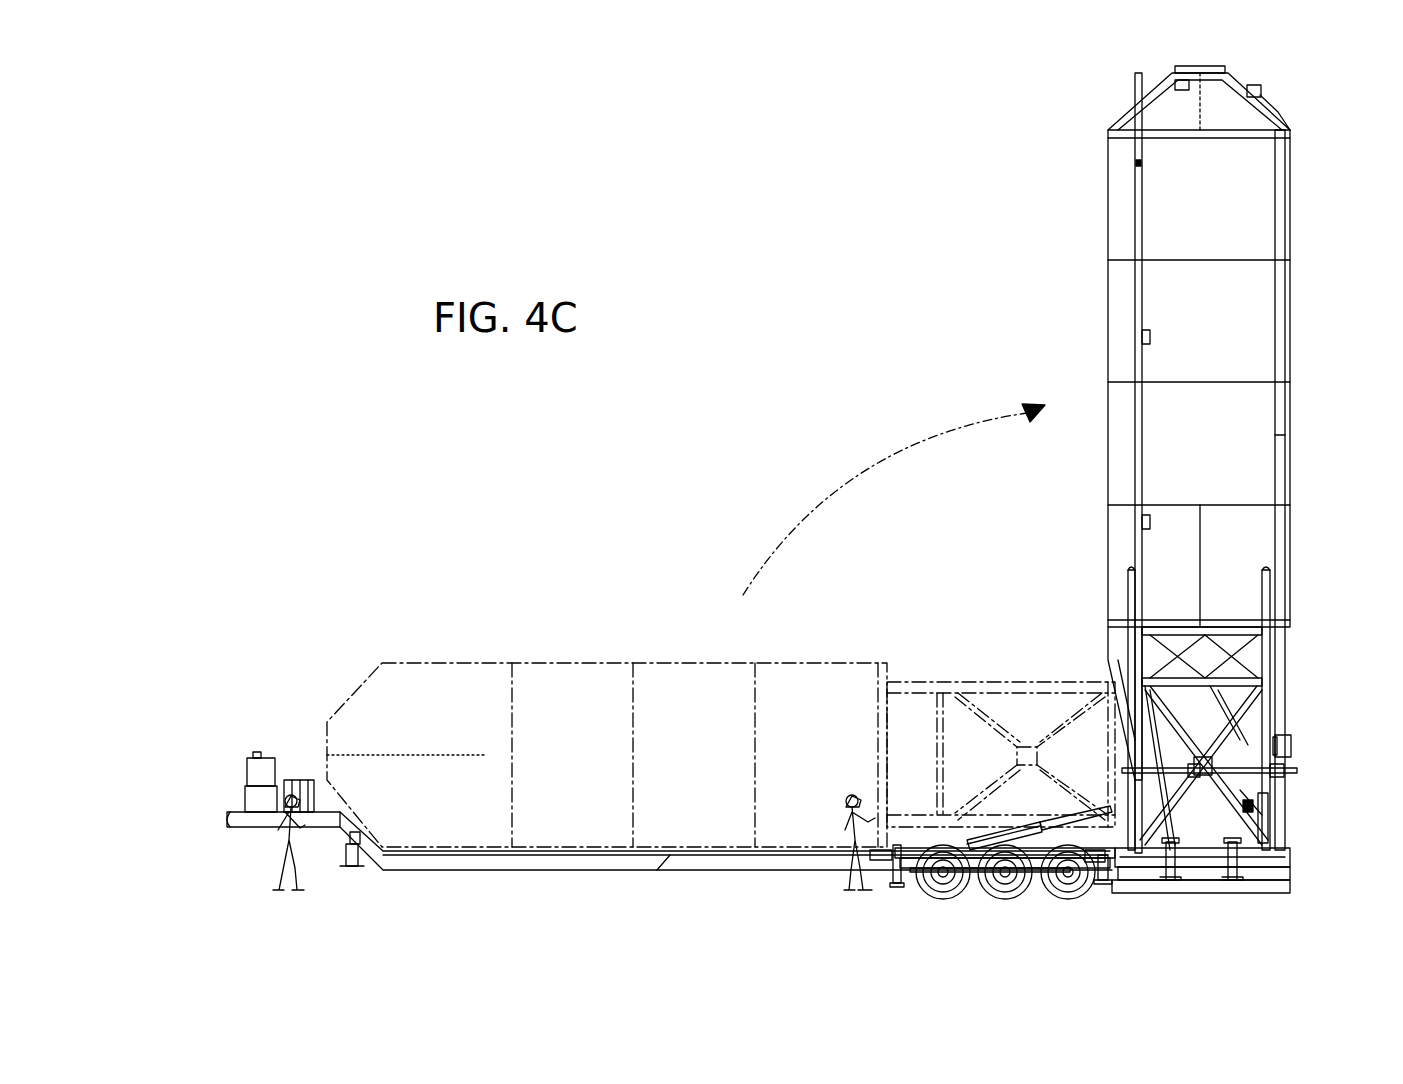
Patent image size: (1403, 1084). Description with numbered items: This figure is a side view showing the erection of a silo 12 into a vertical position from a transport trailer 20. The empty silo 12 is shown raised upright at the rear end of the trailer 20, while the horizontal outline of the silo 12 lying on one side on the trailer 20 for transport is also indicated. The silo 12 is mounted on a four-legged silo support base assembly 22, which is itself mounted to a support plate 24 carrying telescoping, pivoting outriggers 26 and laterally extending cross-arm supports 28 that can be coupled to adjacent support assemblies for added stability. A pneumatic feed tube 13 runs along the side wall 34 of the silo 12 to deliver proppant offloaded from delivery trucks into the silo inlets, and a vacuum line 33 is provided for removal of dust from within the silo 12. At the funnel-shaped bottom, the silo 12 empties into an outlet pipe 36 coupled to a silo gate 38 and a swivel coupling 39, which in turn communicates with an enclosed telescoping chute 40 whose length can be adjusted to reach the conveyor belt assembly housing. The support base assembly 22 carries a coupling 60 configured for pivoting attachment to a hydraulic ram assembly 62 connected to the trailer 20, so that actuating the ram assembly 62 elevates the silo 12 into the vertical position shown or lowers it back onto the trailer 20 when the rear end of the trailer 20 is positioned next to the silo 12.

The silo 12 is at (1085, 165).
The pneumatic feed tube 13 is at (1140, 362).
The transport trailer 20 is at (413, 868).
The silo support base assembly 22 is at (1125, 665).
The support plate 24 is at (1285, 884).
The outriggers 26 is at (1170, 872).
The cross-arm supports 28 is at (1235, 770).
The vacuum line 33 is at (1283, 203).
The side wall 34 is at (1117, 293).
The outlet pipe 36 is at (1255, 728).
The silo gate 38 is at (1245, 700).
The swivel coupling 39 is at (1290, 755).
The telescoping chute 40 is at (1245, 795).
The coupling 60 is at (1112, 878).
The hydraulic ram assembly 62 is at (1003, 840).